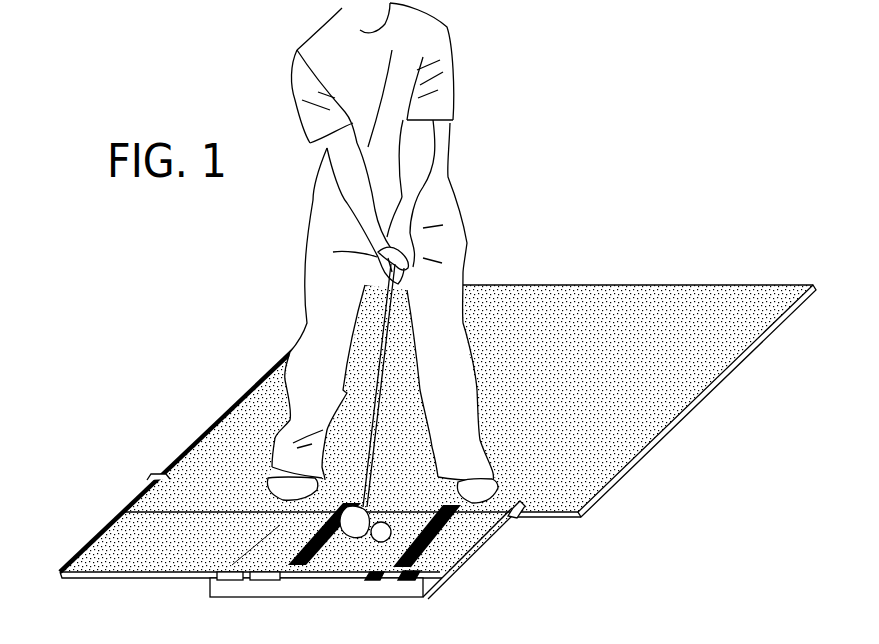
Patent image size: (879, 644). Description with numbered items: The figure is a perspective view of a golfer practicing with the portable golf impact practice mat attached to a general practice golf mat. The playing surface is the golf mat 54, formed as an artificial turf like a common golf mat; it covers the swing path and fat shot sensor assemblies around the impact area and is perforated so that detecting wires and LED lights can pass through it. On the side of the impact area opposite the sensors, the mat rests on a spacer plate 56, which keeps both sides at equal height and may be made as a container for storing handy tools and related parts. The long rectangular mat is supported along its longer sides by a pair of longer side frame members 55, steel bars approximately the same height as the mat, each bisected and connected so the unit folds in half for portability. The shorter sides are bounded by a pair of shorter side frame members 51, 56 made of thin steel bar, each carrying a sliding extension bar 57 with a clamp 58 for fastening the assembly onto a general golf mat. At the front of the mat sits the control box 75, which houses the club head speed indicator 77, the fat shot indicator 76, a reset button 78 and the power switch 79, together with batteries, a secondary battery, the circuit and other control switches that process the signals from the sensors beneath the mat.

The shorter side frame member 51 is at (70, 556).
The golf mat 54 is at (140, 536).
The longer side frame member 55 is at (136, 574).
The spacer plate 56 is at (477, 542).
The sliding extension bar 57 is at (131, 499).
The clamp 58 is at (160, 478).
The control box 75 is at (312, 588).
The fat shot indicator 76 is at (283, 583).
The club head speed indicator 77 is at (266, 583).
The reset button 78 is at (432, 591).
The power switch 79 is at (373, 588).